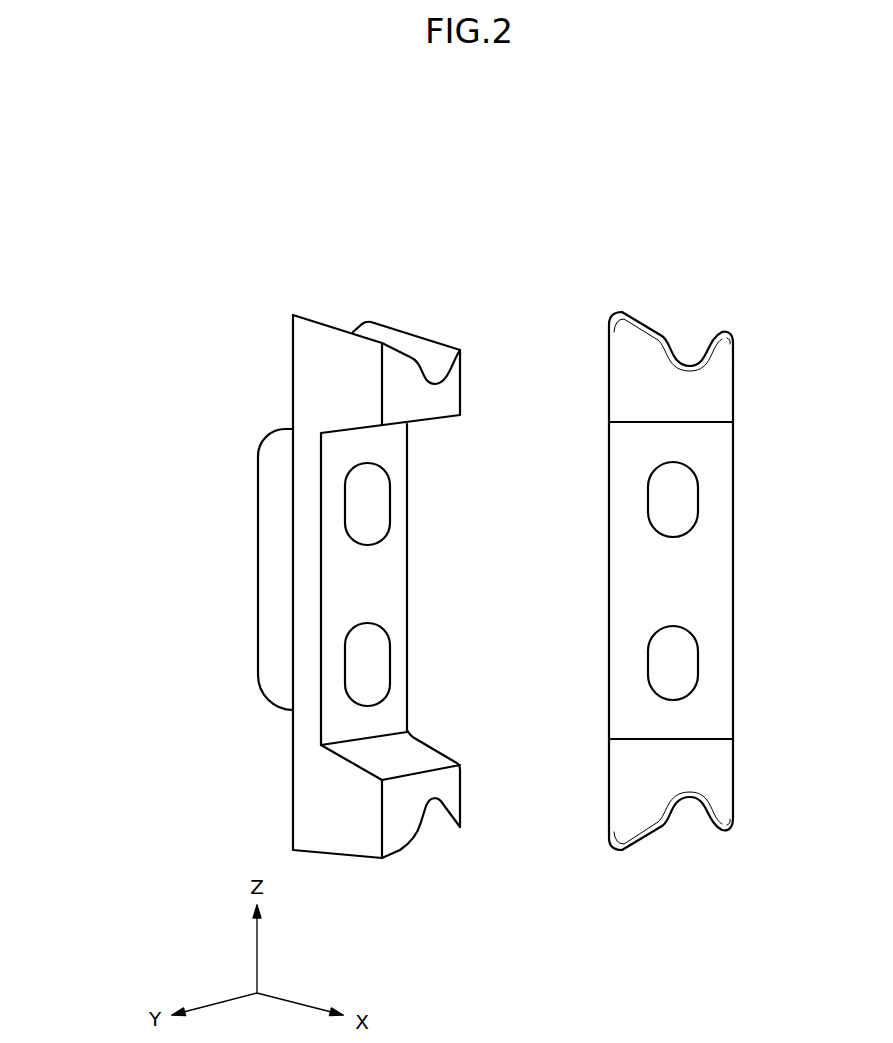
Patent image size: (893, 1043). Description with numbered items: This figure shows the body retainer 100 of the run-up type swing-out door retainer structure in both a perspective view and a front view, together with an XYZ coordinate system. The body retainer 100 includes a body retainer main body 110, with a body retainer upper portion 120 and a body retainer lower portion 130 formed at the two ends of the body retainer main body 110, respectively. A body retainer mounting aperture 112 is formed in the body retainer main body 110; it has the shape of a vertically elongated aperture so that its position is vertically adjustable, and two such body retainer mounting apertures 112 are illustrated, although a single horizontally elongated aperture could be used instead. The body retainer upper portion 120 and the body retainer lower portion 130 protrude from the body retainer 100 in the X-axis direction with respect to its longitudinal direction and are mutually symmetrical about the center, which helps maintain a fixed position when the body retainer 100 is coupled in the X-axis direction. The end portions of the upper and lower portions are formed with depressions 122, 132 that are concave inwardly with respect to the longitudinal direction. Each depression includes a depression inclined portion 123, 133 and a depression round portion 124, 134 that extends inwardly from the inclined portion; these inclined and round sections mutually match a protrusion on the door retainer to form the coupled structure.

The body retainer 100 is at (118, 480).
The body retainer main body 110 is at (268, 540).
The body retainer mounting aperture 112 is at (673, 498).
The body retainer upper portion 120 is at (293, 377).
The depression 122 is at (748, 197).
The depression inclined portion 123 is at (650, 322).
The depression round portion 124 is at (692, 352).
The body retainer lower portion 130 is at (293, 788).
The depression 132 is at (748, 963).
The depression inclined portion 133 is at (650, 838).
The depression round portion 134 is at (692, 803).